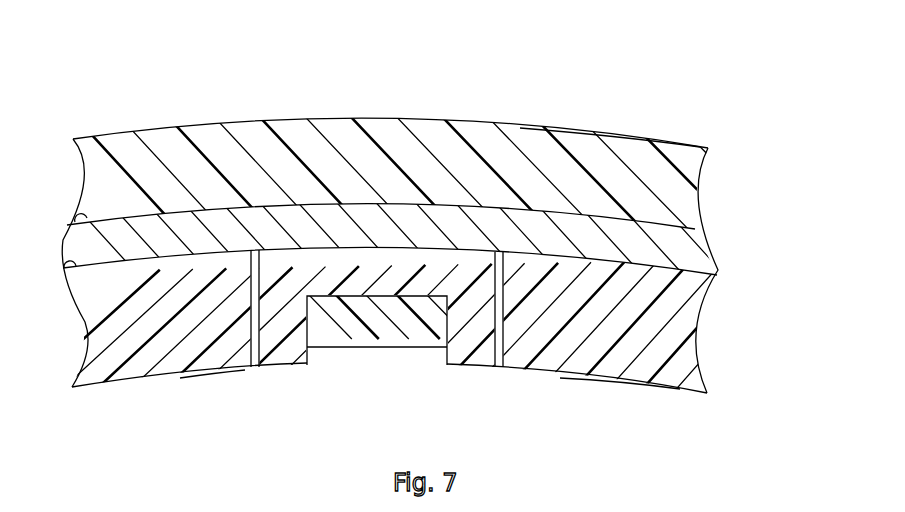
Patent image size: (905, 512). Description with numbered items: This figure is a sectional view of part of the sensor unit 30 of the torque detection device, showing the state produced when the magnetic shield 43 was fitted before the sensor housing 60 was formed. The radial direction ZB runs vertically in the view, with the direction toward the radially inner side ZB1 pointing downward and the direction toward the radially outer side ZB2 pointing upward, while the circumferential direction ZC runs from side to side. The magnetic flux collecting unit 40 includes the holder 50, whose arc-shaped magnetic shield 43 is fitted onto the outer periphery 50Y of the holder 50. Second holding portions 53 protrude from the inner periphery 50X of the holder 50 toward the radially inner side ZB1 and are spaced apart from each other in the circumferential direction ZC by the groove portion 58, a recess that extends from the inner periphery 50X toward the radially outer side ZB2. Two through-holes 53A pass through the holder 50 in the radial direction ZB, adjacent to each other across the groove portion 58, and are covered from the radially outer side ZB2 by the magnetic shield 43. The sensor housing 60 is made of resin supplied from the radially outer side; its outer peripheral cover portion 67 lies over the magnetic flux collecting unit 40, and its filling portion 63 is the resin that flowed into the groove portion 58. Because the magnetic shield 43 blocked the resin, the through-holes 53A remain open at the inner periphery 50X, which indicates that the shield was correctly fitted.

The sensor unit 30 is at (174, 66).
The magnetic flux collecting unit 40 is at (117, 397).
The magnetic shield 43 is at (80, 222).
The holder 50 is at (155, 377).
The inner periphery 50X is at (597, 378).
The outer periphery 50Y is at (72, 267).
The second holding portion 53 is at (205, 363).
The through-hole 53A is at (257, 367).
The groove portion 58 is at (440, 360).
The sensor housing 60 is at (112, 135).
The filling portion 63 is at (372, 340).
The outer peripheral cover portion 67 is at (612, 143).
The radial direction ZB is at (740, 195).
The direction toward radially inner side ZB1 is at (744, 355).
The direction toward radially outer side ZB2 is at (744, 180).
The circumferential direction ZC is at (447, 75).